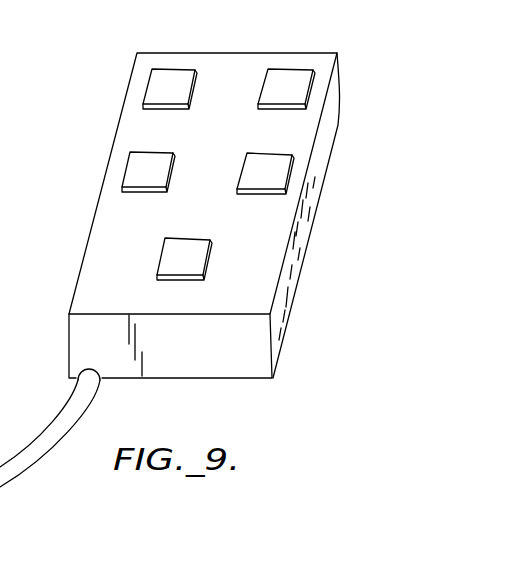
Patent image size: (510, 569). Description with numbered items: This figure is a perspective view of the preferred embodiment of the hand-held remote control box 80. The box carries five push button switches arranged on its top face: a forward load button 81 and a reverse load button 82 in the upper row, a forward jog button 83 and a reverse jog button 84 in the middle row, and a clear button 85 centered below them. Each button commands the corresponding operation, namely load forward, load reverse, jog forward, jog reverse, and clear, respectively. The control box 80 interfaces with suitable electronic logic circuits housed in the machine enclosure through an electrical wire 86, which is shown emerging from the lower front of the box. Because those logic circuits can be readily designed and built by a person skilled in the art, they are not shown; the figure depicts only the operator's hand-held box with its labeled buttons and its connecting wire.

The remote control box 80 is at (200, 353).
The forward load button 81 is at (165, 83).
The reverse load button 82 is at (285, 88).
The forward jog button 83 is at (147, 167).
The reverse jog button 84 is at (272, 167).
The clear button 85 is at (173, 253).
The electrical wire 86 is at (58, 424).